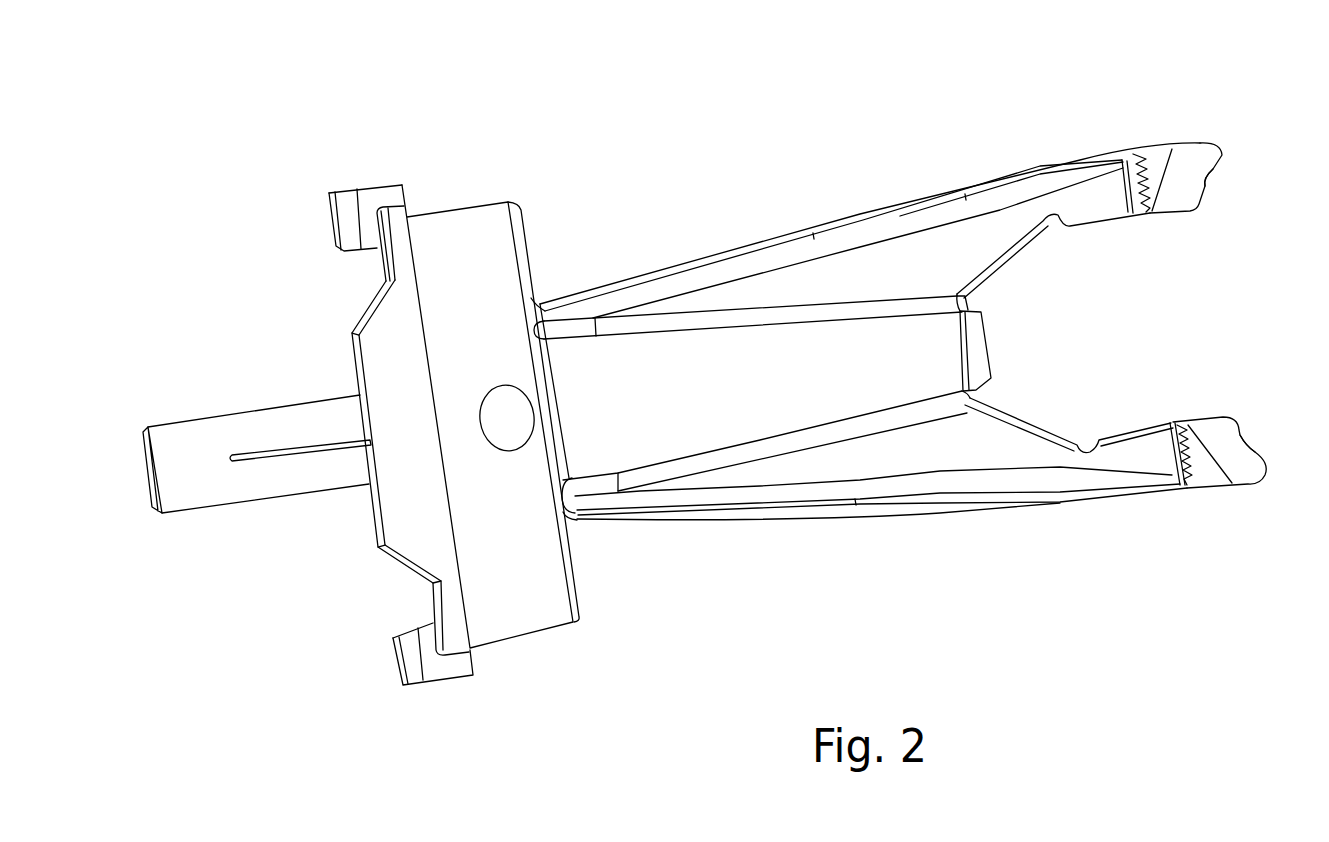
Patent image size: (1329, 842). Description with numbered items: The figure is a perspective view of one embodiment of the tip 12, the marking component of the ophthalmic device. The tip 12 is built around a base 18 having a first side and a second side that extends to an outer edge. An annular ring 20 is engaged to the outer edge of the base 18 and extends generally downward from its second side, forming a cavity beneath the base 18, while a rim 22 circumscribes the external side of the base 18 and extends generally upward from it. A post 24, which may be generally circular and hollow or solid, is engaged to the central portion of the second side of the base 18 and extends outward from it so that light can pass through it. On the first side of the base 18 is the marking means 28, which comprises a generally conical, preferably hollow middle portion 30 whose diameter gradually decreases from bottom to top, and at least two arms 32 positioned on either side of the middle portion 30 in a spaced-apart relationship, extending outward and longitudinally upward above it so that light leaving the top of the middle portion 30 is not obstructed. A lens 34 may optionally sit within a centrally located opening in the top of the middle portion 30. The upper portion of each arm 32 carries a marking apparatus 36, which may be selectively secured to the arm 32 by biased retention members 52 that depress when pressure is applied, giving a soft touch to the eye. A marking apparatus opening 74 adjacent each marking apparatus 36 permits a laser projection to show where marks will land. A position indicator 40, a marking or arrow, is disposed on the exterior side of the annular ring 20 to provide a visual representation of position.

The tip 12 is at (820, 135).
The base 18 is at (503, 150).
The annular ring 20 is at (453, 210).
The rim 22 is at (370, 303).
The post 24 is at (202, 482).
The marking means 28 is at (880, 180).
The middle portion 30 is at (618, 377).
The arms 32 is at (992, 235).
The lens 34 is at (983, 335).
The marking apparatus 36 is at (1190, 160).
The position indicator 40 is at (367, 194).
The biased retention member 52 is at (1150, 153).
The marking apparatus opening 74 is at (1224, 175).